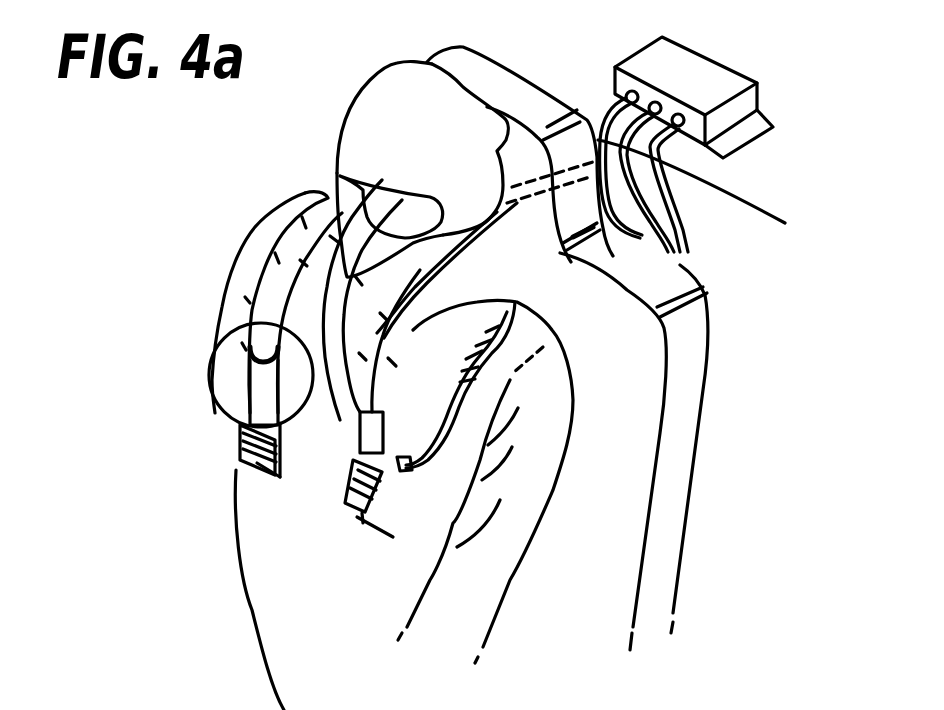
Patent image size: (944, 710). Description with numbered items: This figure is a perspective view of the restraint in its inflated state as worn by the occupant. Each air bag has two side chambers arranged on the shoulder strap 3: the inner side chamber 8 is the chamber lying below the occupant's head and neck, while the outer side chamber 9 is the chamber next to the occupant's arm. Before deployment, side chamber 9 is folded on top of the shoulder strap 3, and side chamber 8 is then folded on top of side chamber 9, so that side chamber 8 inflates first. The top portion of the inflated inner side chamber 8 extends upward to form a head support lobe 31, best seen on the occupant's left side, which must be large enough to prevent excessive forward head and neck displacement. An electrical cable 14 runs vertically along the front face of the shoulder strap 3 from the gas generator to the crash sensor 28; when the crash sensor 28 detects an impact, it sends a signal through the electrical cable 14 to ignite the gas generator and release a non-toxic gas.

The shoulder strap 3 is at (297, 478).
The inner side chamber 8 is at (368, 328).
The outer side chamber 9 is at (365, 287).
The electrical cable 14 is at (300, 228).
The crash sensor 28 is at (620, 50).
The head support lobe 31 is at (580, 243).